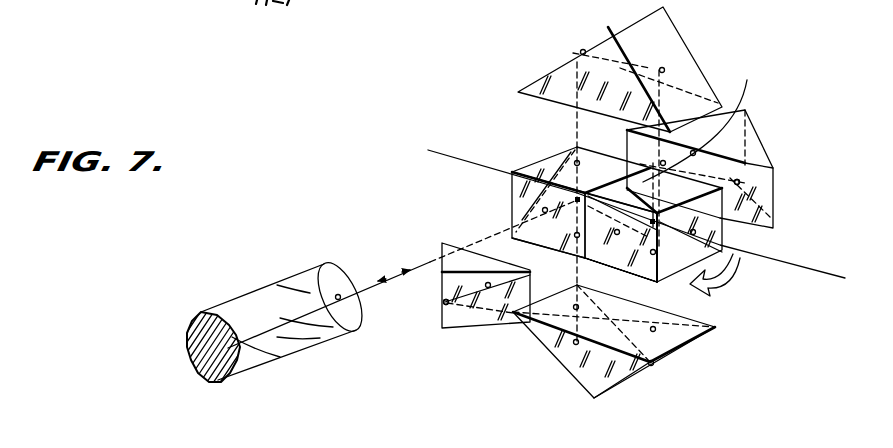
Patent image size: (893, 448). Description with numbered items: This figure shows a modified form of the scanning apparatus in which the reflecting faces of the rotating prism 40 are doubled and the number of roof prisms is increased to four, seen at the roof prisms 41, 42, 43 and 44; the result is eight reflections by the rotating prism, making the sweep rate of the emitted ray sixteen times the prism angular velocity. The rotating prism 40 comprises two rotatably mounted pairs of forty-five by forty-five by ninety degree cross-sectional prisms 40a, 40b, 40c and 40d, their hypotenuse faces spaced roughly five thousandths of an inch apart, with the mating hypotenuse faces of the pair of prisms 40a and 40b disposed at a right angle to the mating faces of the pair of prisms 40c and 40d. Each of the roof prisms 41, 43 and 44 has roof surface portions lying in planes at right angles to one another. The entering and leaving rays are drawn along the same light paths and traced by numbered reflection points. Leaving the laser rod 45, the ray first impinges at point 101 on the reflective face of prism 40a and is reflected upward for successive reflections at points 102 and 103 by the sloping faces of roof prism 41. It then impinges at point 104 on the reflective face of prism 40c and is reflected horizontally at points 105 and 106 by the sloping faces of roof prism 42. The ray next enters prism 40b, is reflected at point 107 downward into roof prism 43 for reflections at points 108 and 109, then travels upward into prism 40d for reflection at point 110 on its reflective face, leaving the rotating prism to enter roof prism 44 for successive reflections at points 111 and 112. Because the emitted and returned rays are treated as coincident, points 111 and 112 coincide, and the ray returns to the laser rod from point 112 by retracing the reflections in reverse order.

The rotating prism 40 is at (576, 146).
The prism 40a is at (535, 161).
The prism 40b is at (538, 226).
The prism 40c is at (727, 230).
The prism 40d is at (678, 261).
The roof prism 41 is at (695, 46).
The roof prism 42 is at (763, 131).
The roof prism 43 is at (706, 310).
The roof prism 44 is at (477, 329).
The light pipe rod 45 is at (277, 367).
The reflection point 101 is at (575, 198).
The reflection point 102 is at (582, 50).
The reflection point 103 is at (665, 70).
The reflection point 104 is at (621, 272).
The reflection point 105 is at (763, 175).
The reflection point 106 is at (706, 126).
The reflection point 107 is at (575, 198).
The reflection point 108 is at (574, 344).
The reflection point 109 is at (652, 365).
The reflection point 110 is at (621, 272).
The reflection point 111 is at (442, 316).
The reflection point 112 is at (442, 316).